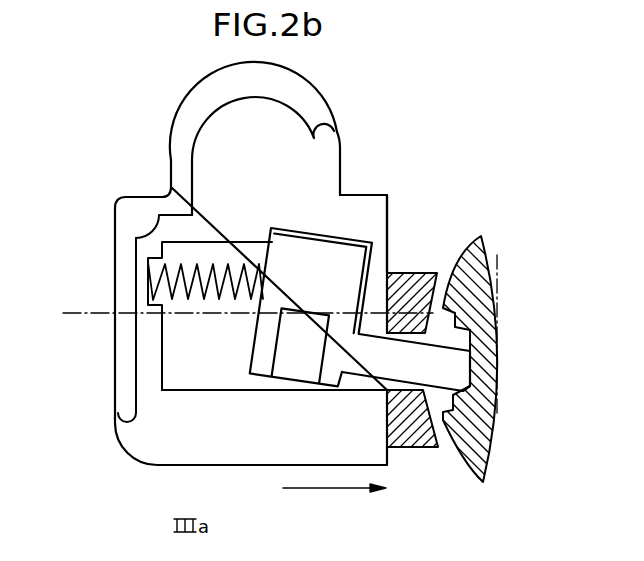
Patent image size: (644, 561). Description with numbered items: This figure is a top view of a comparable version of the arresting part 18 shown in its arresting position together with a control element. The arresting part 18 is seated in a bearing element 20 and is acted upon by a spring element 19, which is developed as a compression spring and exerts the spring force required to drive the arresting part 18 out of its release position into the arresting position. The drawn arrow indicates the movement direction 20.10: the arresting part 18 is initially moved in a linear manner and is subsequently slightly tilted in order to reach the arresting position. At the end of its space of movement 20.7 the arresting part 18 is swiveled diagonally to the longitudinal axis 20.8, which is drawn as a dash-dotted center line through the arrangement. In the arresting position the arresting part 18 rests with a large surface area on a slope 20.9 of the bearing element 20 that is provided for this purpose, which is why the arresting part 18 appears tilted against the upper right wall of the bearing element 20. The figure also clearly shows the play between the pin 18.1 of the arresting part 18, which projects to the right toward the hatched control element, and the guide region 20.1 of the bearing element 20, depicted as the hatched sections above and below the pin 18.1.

The arresting part 18 is at (325, 270).
The pin 18.1 is at (487, 455).
The spring element 19 is at (183, 283).
The bearing element 20 is at (218, 212).
The guide region 20.1 is at (407, 418).
The space of movement 20.7 is at (200, 355).
The longitudinal axis 20.8 is at (79, 316).
The slope 20.9 is at (373, 257).
The movement direction 20.10 is at (325, 490).